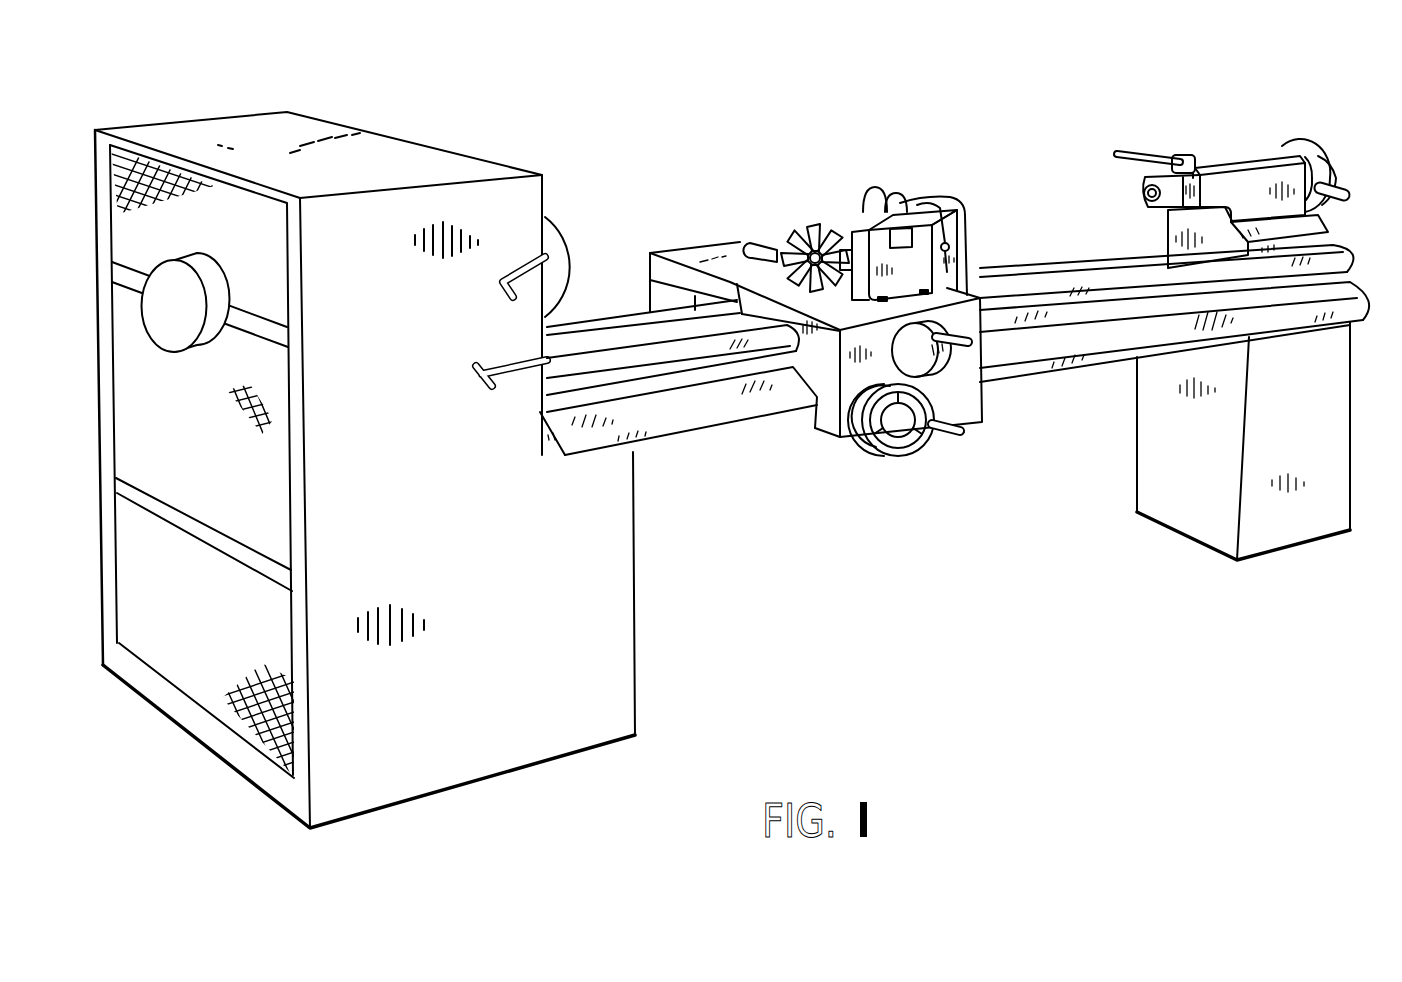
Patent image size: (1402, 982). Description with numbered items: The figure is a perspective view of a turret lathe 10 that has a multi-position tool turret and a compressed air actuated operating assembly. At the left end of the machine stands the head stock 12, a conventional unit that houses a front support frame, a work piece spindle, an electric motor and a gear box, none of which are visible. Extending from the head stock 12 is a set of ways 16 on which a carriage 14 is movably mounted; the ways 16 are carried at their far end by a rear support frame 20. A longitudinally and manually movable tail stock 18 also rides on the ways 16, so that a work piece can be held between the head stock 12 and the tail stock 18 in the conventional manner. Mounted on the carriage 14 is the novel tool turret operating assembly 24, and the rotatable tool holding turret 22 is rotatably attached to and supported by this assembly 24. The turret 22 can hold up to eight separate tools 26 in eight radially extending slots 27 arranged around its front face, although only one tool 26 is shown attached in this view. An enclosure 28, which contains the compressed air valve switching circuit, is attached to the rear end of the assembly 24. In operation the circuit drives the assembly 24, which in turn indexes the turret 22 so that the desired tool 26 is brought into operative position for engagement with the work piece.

The turret lathe 10 is at (741, 451).
The head stock 12 is at (393, 152).
The carriage 14 is at (938, 392).
The set of ways 16 is at (1013, 265).
The tail stock 18 is at (1228, 167).
The rear support frame 20 is at (1300, 537).
The tool holding turret 22 is at (957, 373).
The tool turret operating assembly 24 is at (930, 195).
The tool 26 is at (748, 245).
The radially extending slot 27 is at (845, 213).
The enclosure 28 is at (947, 198).